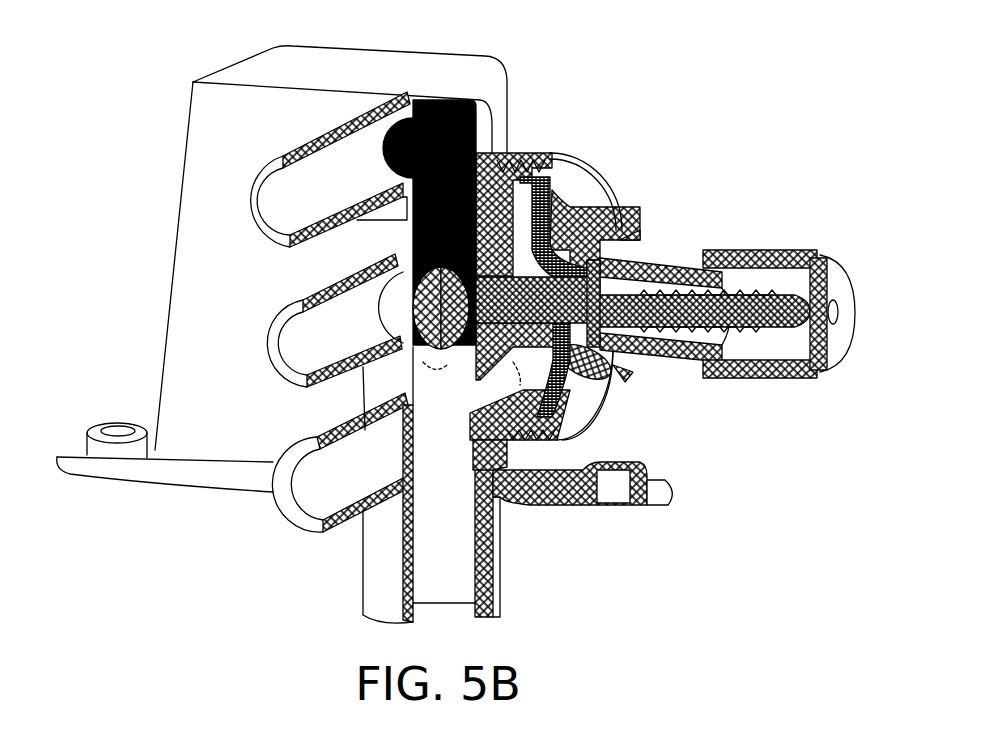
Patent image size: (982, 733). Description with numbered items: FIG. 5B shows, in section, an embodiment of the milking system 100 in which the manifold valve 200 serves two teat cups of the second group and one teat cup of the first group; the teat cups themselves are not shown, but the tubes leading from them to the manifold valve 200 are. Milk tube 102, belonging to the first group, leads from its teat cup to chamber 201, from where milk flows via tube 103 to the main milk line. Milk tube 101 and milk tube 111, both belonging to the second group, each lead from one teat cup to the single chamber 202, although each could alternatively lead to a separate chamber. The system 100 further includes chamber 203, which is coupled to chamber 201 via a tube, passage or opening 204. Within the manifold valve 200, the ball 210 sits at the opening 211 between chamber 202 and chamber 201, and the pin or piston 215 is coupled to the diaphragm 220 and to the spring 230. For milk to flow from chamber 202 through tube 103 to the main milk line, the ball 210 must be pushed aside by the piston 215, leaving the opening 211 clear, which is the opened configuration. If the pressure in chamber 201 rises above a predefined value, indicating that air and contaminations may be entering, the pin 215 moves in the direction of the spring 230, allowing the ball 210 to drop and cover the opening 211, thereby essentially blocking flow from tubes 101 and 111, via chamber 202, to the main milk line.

The system 100 is at (146, 84).
The milk tube 111 is at (300, 150).
The milk tube 101 is at (310, 262).
The opening 211 is at (285, 520).
The milk tube 102 is at (353, 515).
The chamber 201 is at (458, 512).
The opening 204 is at (525, 470).
The tube 103 is at (500, 585).
The chamber 202 is at (440, 106).
The ball 210 is at (498, 153).
The chamber 203 is at (513, 235).
The manifold valve 200 is at (593, 125).
The diaphragm 220 is at (571, 175).
The piston 215 is at (670, 305).
The spring 230 is at (757, 300).